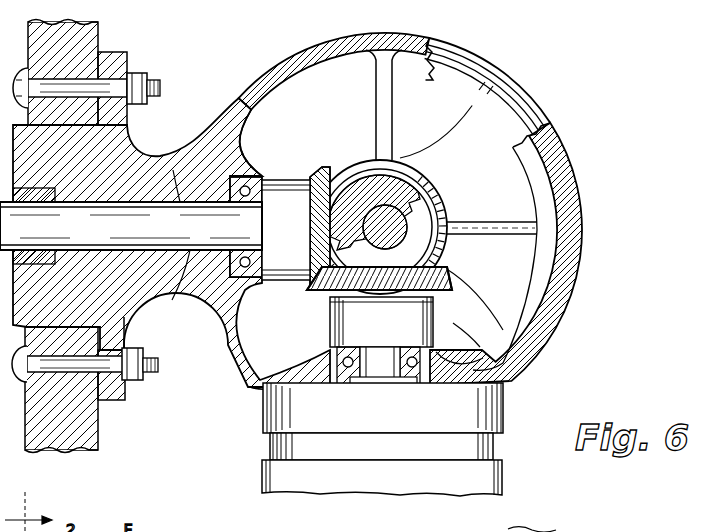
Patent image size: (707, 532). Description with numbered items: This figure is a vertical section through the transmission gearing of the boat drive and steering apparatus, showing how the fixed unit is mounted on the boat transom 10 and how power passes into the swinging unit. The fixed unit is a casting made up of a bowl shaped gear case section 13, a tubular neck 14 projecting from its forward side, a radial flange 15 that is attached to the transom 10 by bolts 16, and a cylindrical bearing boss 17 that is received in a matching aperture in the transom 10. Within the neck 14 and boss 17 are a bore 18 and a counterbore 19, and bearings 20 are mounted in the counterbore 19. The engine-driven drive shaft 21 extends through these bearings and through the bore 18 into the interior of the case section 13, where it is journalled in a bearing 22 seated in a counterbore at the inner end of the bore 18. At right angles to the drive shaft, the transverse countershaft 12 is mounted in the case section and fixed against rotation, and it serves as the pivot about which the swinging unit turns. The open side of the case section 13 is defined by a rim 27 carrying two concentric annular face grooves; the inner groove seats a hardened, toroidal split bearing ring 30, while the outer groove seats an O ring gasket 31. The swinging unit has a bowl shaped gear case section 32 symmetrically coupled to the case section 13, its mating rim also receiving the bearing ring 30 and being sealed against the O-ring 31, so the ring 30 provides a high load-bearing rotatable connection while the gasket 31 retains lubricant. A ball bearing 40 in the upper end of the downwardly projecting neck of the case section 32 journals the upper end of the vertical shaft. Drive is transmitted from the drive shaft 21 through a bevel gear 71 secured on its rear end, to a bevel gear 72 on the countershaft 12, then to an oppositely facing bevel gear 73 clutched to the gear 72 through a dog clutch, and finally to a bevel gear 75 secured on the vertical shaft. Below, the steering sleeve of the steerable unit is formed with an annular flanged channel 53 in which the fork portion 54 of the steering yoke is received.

The boat transom 10 is at (63, 448).
The countershaft 12 is at (398, 250).
The gear case section 13 is at (304, 44).
The tubular neck 14 is at (150, 160).
The radial flange 15 is at (128, 53).
The bolts 16 is at (158, 80).
The cylindrical bearing boss 17 is at (77, 307).
The bore 18 is at (190, 256).
The counterbore 19 is at (54, 260).
The bearings 20 is at (46, 262).
The drive shaft 21 is at (240, 146).
The bearing 22 is at (264, 172).
The rim 27 is at (483, 357).
The bearing ring 30 is at (505, 107).
The O ring gasket 31 is at (482, 68).
The gear case section 32 is at (553, 138).
The ball bearing 40 is at (332, 352).
The annular flanged channel 53 is at (330, 458).
The fork portion 54 is at (268, 445).
The bevel gear 71 is at (330, 174).
The bevel gear 72 is at (410, 160).
The bevel gear 73 is at (442, 210).
The bevel gear 75 is at (332, 304).